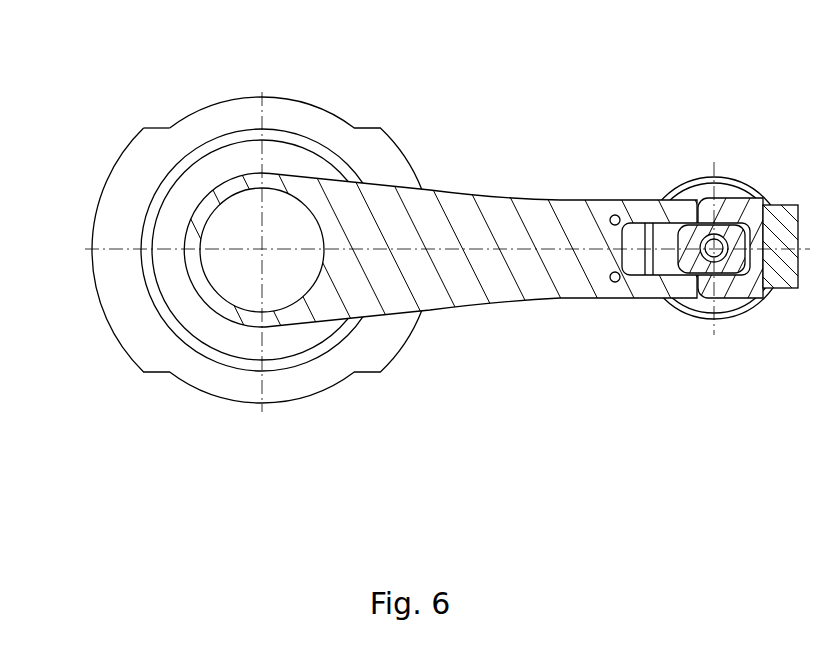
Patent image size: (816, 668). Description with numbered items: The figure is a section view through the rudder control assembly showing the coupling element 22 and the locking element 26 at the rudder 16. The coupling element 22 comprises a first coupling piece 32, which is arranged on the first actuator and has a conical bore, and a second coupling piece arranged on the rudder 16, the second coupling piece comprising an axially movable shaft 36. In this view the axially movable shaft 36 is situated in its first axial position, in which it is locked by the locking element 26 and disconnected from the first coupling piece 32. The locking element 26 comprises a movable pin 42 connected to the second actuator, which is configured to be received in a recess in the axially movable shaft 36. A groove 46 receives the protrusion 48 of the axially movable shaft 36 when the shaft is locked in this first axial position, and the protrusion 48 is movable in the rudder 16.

The rudder 16 is at (432, 190).
The coupling element 22 is at (150, 172).
The locking element 26 is at (719, 276).
The first coupling piece 32 is at (216, 273).
The axially movable shaft 36 is at (700, 236).
The movable pin 42 is at (708, 235).
The groove 46 is at (762, 202).
The protrusion 48 is at (735, 225).